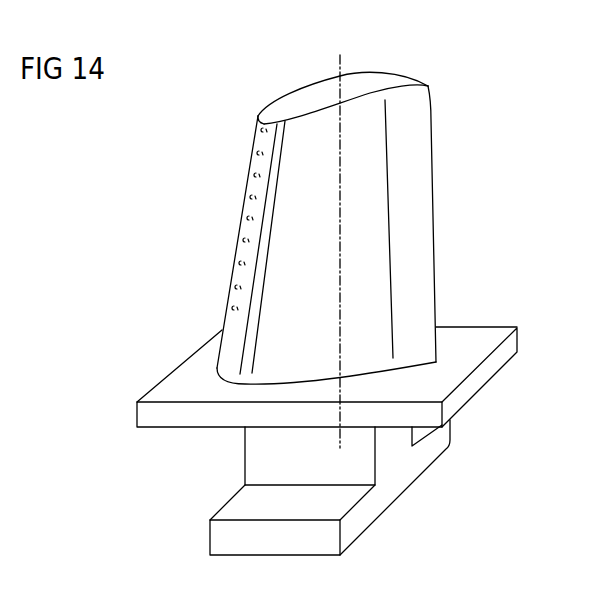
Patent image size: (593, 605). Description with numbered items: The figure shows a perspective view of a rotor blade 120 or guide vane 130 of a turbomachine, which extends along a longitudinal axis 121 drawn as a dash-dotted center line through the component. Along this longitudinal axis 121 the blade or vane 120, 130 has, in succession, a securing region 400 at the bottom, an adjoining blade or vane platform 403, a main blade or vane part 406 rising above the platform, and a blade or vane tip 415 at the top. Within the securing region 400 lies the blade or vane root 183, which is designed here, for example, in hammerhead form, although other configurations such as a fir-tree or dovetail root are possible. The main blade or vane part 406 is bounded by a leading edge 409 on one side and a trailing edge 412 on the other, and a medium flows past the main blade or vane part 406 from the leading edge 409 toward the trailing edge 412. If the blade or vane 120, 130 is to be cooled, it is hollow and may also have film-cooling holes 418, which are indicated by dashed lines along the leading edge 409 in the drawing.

The rotor blade 120 is at (157, 240).
The guide vane 130 is at (276, 246).
The longitudinal axis 121 is at (339, 68).
The blade or vane tip 415 is at (268, 112).
The film-cooling holes 418 is at (250, 172).
The leading edge 409 is at (239, 176).
The trailing edge 412 is at (446, 193).
The main blade or vane part 406 is at (226, 348).
The blade or vane platform 403 is at (485, 370).
The securing region 400 is at (393, 497).
The blade or vane root 183 is at (229, 505).